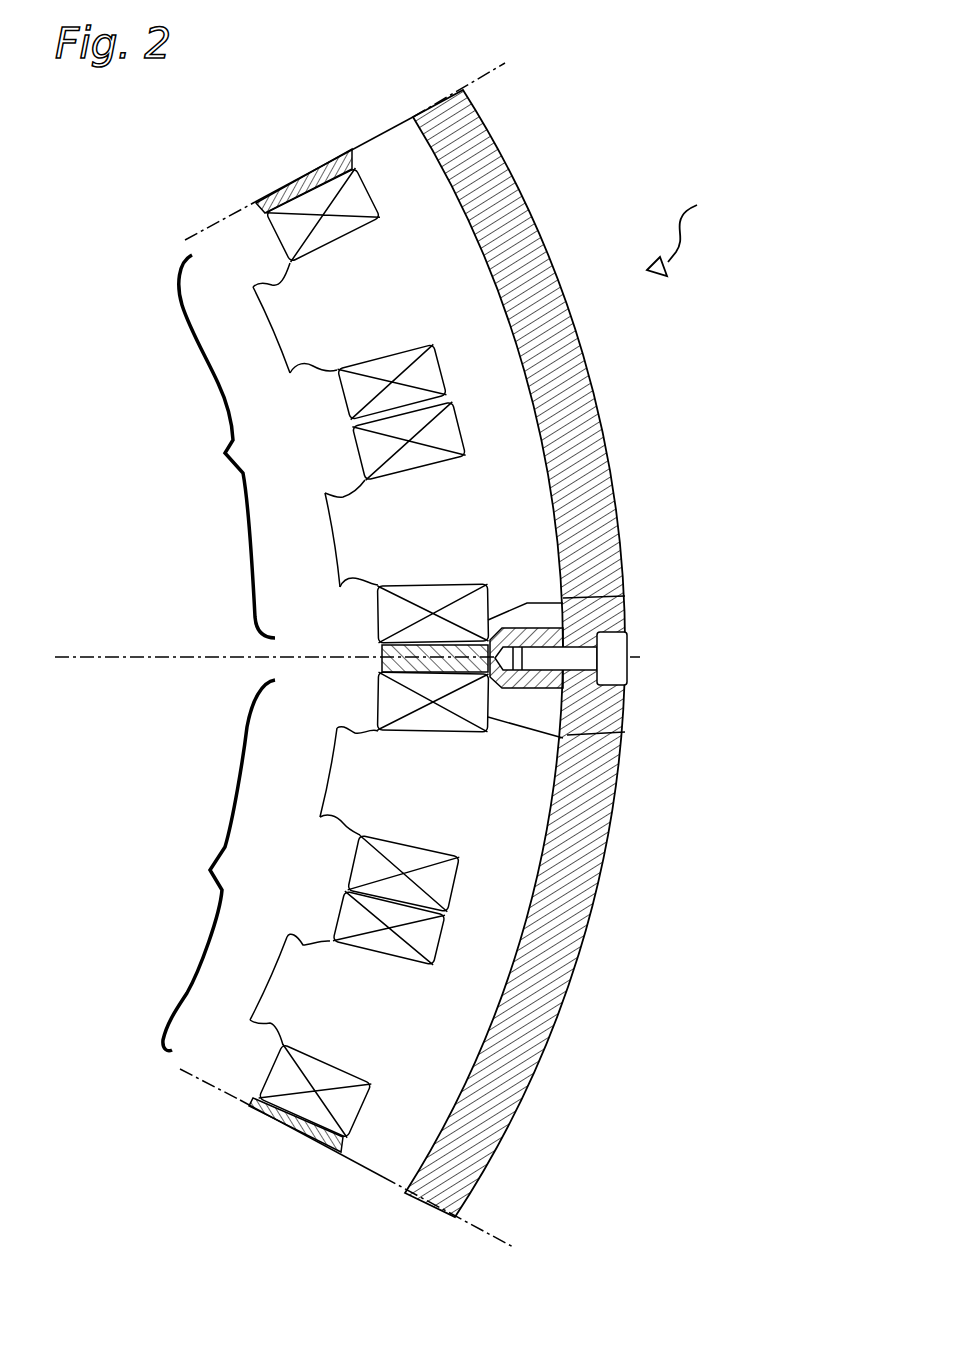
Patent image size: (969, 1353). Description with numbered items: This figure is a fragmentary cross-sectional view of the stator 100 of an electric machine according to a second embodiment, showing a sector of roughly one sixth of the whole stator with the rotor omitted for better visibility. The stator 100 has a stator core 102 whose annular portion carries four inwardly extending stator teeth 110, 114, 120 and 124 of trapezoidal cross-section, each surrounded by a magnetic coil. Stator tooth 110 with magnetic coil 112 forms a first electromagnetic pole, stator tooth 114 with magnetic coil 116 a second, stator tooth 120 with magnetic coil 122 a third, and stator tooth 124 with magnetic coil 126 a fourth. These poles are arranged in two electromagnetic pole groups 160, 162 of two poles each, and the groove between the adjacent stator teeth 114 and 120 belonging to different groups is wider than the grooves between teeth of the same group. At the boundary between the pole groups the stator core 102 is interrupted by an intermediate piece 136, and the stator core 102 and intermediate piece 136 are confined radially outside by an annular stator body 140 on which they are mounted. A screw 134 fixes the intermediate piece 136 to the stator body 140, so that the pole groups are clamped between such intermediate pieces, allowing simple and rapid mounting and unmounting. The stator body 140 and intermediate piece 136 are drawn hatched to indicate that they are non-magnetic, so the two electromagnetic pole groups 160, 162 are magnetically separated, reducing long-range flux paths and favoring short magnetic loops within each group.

The stator 100 is at (709, 229).
The stator core 102 is at (373, 132).
The stator tooth 110 is at (378, 325).
The magnetic coil 112 is at (264, 228).
The stator tooth 114 is at (432, 558).
The magnetic coil 116 is at (352, 437).
The stator tooth 120 is at (430, 808).
The magnetic coil 122 is at (375, 692).
The stator tooth 124 is at (365, 1030).
The magnetic coil 126 is at (342, 893).
The screw 134 is at (630, 643).
The intermediate piece 136 is at (382, 657).
The stator body 140 is at (613, 490).
The first electromagnetic pole group 160 is at (210, 446).
The second electromagnetic pole group 162 is at (210, 865).